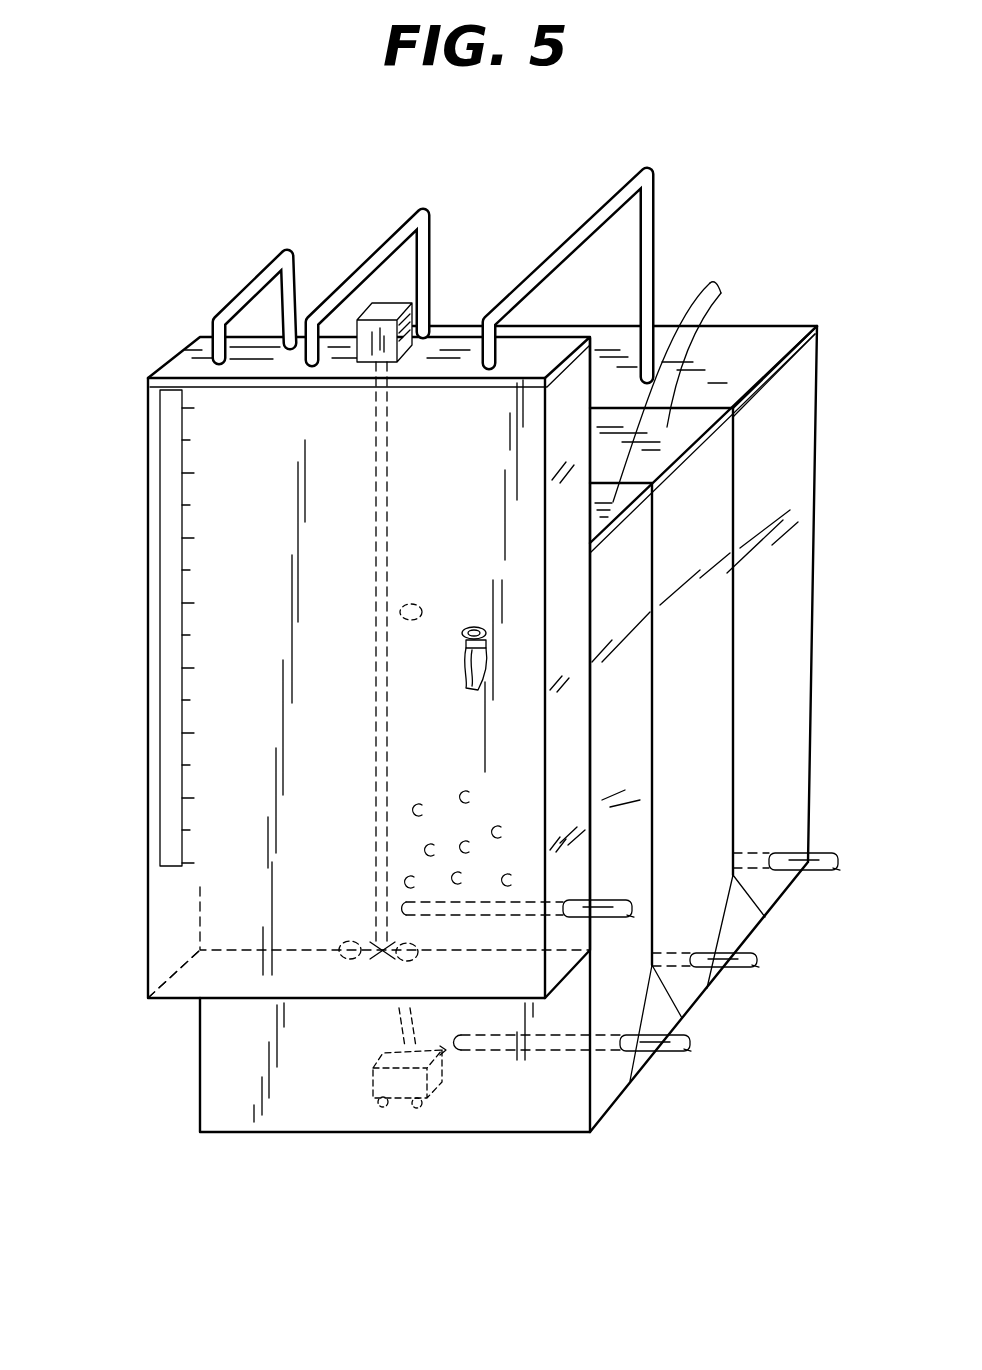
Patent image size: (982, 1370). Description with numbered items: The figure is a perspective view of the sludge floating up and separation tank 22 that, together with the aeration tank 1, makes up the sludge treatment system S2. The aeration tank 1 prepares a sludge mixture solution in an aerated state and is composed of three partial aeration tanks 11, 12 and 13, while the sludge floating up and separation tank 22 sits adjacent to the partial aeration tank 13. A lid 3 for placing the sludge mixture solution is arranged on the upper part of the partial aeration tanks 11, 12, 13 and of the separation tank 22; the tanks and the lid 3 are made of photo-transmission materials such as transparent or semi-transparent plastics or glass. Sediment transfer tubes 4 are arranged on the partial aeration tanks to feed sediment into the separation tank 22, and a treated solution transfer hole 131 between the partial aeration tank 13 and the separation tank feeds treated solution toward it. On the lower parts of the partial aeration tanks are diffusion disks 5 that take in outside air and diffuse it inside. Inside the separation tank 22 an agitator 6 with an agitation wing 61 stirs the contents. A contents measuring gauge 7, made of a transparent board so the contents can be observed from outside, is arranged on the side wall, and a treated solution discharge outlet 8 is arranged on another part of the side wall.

The aeration tank 1 is at (790, 293).
The partial aeration tank 11 is at (785, 338).
The partial aeration tank 12 is at (712, 638).
The partial aeration tank 13 is at (625, 712).
The lid 3 is at (710, 338).
The sediment transfer tube 4 is at (360, 265).
The diffusion disk 5 is at (805, 872).
The agitator 6 is at (413, 307).
The agitation wing 61 is at (347, 962).
The contents measuring gauge 7 is at (160, 648).
The treated solution discharge outlet 8 is at (462, 675).
The treated solution transfer hole 131 is at (410, 605).
The sludge floating up and separation tank 22 is at (165, 955).
The sludge treatment system S2 is at (133, 408).